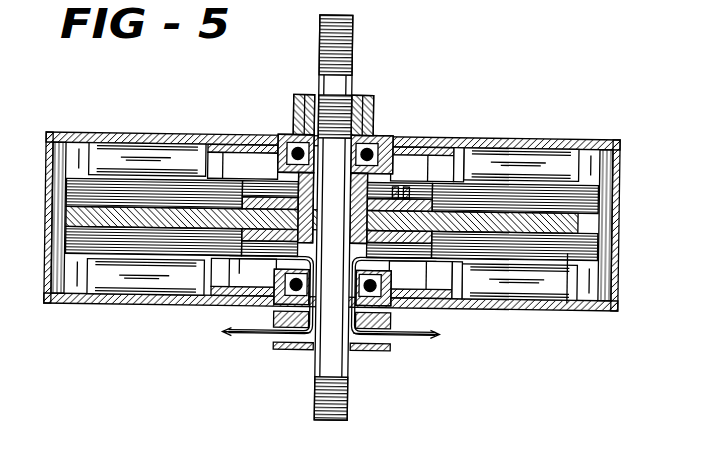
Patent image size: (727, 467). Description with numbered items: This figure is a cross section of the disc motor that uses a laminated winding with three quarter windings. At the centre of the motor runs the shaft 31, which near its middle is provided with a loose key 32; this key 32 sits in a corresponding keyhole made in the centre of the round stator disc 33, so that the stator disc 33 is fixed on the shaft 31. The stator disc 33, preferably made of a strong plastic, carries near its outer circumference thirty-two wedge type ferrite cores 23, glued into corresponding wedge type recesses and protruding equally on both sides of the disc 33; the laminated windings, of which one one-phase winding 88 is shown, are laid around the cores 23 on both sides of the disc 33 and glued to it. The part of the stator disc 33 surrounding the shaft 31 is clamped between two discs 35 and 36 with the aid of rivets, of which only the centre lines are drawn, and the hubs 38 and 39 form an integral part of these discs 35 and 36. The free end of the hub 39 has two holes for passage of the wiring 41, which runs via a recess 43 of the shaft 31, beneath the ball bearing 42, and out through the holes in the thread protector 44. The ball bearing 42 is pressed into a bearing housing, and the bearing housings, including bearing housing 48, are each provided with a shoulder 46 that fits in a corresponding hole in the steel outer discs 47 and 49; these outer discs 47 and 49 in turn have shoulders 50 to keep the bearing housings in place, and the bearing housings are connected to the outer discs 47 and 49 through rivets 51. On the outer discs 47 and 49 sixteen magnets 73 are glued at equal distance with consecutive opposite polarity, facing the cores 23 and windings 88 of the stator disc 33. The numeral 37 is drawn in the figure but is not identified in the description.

The wedge type ferrite cores 23 is at (508, 186).
The shaft 31 is at (336, 82).
The loose key 32 is at (378, 137).
The stator disc 33 is at (579, 222).
The disc 35 is at (228, 286).
The disc 36 is at (388, 201).
The shaft flange 37 is at (245, 191).
The hub 38 is at (268, 153).
The hub 39 is at (490, 276).
The wiring 41 is at (233, 338).
The ball bearing 42 is at (393, 301).
The recess 43 is at (343, 344).
The thread protector 44 is at (368, 351).
The shoulder 46 is at (282, 138).
The outer disc 47 is at (593, 295).
The bearing housing 48 is at (448, 145).
The outer disc 49 is at (542, 137).
The shoulders 50 is at (463, 148).
The rivets 51 is at (427, 161).
The magnets 73 is at (568, 155).
The 1-phase winding 88 is at (563, 243).